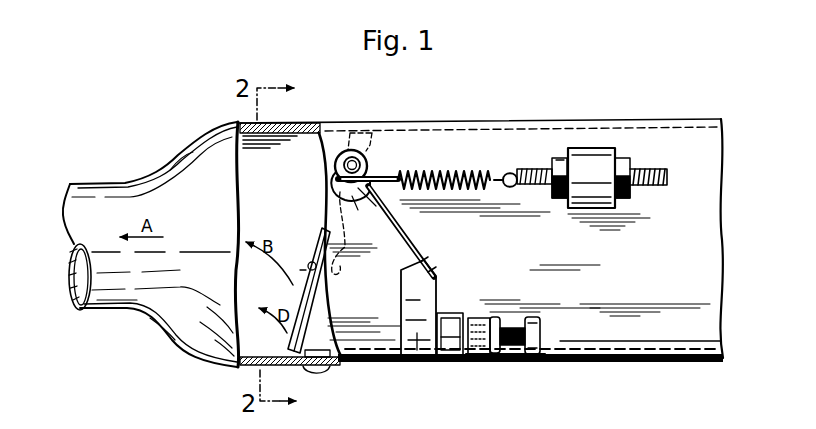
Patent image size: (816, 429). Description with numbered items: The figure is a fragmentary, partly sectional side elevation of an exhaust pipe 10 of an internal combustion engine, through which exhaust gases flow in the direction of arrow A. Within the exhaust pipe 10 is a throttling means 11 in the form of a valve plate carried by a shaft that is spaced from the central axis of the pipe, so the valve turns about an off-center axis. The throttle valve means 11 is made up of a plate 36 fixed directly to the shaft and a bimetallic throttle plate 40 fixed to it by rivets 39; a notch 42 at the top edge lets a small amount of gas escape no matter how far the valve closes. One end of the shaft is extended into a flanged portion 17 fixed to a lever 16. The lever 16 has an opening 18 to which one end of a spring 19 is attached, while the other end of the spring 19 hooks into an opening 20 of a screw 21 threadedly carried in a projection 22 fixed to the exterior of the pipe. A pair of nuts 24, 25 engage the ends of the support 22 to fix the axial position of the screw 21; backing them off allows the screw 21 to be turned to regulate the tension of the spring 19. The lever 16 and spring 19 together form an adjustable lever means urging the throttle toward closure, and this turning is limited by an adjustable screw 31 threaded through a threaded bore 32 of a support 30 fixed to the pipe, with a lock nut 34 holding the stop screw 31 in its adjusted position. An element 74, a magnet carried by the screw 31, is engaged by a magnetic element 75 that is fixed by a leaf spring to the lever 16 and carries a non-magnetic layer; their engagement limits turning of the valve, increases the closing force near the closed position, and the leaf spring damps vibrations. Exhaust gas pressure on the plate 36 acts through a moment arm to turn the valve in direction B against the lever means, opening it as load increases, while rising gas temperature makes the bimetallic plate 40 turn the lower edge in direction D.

The exhaust pipe 10 is at (562, 100).
The throttling means 11 is at (318, 224).
The lever 16 is at (352, 208).
The flanged portion 17 is at (353, 156).
The opening 18 is at (340, 176).
The spring 19 is at (442, 168).
The opening 20 is at (512, 168).
The screw 21 is at (533, 187).
The projection 22 is at (592, 160).
The nut 24 is at (558, 188).
The nut 25 is at (620, 188).
The support 30 is at (477, 317).
The adjustable screw 31 is at (520, 354).
The threaded bore 32 is at (473, 364).
The lock nut 34 is at (495, 317).
The plate 36 is at (333, 210).
The rivets 39 is at (318, 255).
The bimetallic throttle plate 40 is at (312, 310).
The notch 42 is at (366, 135).
The element 74 is at (452, 362).
The element 75 is at (412, 362).